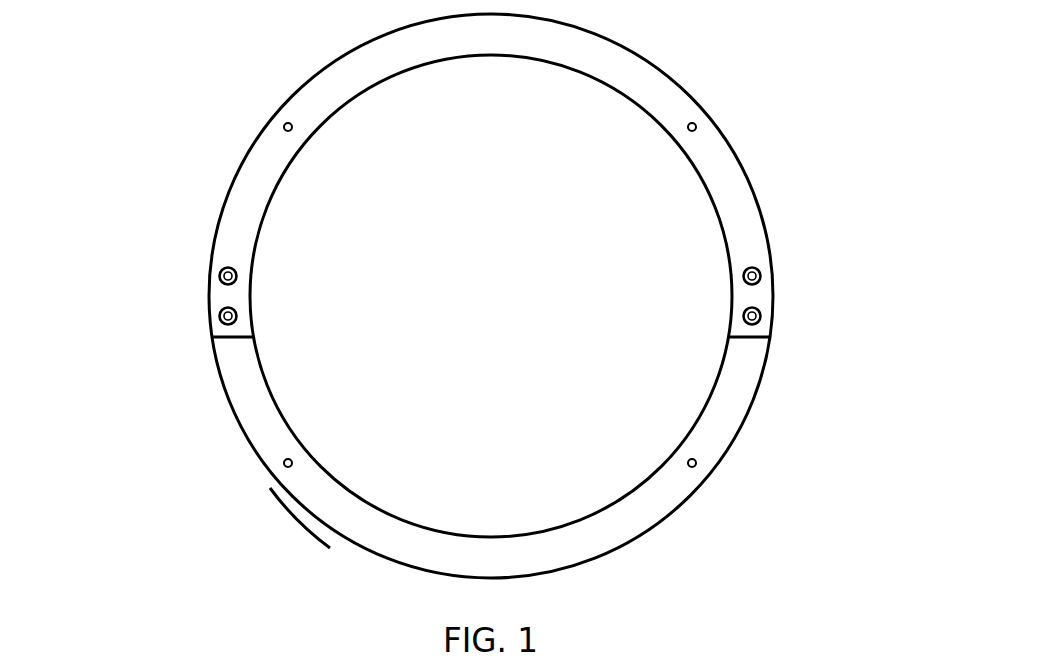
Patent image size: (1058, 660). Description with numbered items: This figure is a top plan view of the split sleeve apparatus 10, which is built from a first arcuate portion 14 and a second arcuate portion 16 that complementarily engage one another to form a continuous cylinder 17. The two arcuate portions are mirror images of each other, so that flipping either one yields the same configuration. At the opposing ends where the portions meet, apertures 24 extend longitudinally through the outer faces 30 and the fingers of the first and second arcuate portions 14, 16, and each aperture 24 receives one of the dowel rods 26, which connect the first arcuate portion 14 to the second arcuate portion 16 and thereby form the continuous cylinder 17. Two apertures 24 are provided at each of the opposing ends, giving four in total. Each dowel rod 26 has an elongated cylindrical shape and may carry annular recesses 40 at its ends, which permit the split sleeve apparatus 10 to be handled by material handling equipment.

The split sleeve apparatus 10 is at (780, 508).
The first arcuate portion 14 is at (733, 147).
The second arcuate portion 16 is at (297, 505).
The continuous cylinder 17 is at (777, 425).
The apertures 24 is at (226, 268).
The dowel rods 26 is at (228, 278).
The outer face 30 is at (255, 413).
The annular recesses 40 is at (285, 124).